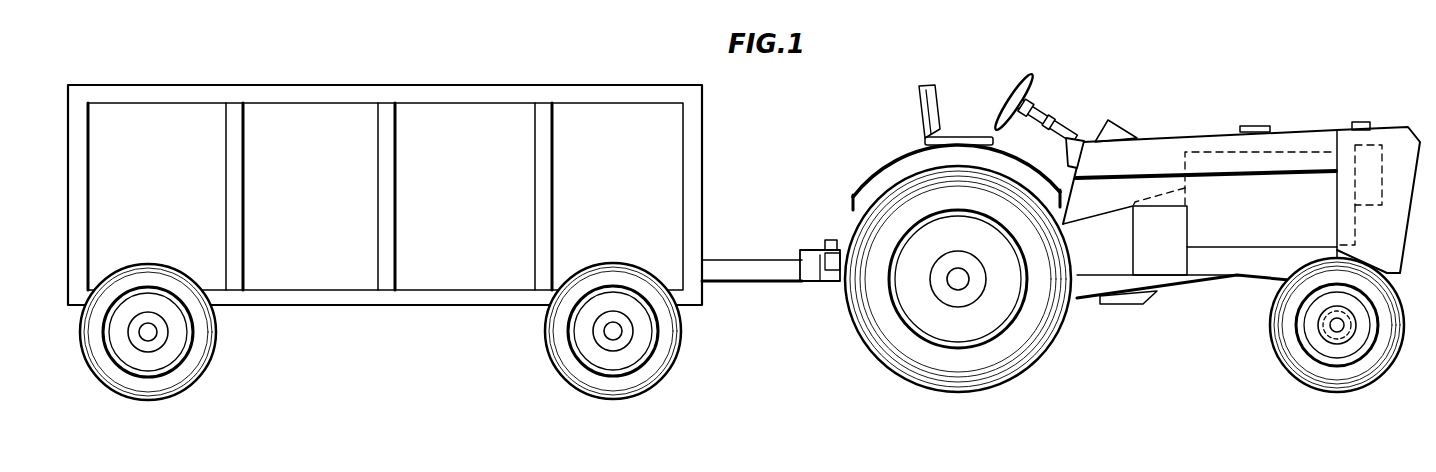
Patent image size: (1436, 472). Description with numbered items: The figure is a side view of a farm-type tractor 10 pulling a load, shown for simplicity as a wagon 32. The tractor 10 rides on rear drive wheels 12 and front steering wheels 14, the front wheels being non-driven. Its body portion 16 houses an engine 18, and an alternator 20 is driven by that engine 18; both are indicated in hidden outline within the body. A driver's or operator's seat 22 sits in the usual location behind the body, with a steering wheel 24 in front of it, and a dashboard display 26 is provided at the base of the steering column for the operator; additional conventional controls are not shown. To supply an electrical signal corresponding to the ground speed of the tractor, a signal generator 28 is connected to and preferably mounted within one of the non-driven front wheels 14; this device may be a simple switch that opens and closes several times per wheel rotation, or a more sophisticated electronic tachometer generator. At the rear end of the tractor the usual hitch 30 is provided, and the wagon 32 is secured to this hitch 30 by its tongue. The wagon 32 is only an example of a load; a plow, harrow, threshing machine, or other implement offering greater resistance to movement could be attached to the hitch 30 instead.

The farm-type tractor 10 is at (1224, 116).
The rear drive wheels 12 is at (1021, 356).
The front steering wheels 14 is at (1290, 358).
The body portion 16 is at (1138, 148).
The engine 18 is at (1288, 148).
The alternator 20 is at (1382, 144).
The operator's seat 22 is at (946, 106).
The steering wheel 24 is at (1016, 80).
The dashboard display 26 is at (1068, 138).
The signal generator 28 is at (1318, 322).
The hitch 30 is at (828, 278).
The wagon 32 is at (707, 116).